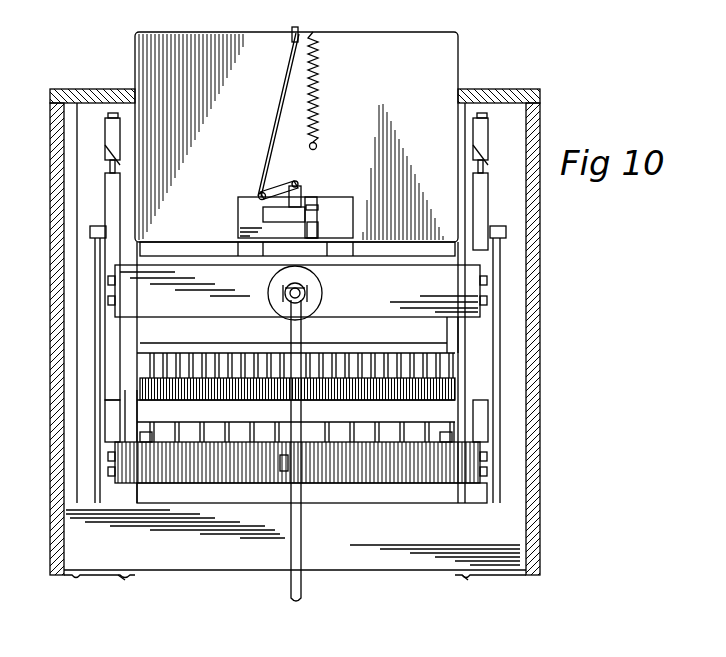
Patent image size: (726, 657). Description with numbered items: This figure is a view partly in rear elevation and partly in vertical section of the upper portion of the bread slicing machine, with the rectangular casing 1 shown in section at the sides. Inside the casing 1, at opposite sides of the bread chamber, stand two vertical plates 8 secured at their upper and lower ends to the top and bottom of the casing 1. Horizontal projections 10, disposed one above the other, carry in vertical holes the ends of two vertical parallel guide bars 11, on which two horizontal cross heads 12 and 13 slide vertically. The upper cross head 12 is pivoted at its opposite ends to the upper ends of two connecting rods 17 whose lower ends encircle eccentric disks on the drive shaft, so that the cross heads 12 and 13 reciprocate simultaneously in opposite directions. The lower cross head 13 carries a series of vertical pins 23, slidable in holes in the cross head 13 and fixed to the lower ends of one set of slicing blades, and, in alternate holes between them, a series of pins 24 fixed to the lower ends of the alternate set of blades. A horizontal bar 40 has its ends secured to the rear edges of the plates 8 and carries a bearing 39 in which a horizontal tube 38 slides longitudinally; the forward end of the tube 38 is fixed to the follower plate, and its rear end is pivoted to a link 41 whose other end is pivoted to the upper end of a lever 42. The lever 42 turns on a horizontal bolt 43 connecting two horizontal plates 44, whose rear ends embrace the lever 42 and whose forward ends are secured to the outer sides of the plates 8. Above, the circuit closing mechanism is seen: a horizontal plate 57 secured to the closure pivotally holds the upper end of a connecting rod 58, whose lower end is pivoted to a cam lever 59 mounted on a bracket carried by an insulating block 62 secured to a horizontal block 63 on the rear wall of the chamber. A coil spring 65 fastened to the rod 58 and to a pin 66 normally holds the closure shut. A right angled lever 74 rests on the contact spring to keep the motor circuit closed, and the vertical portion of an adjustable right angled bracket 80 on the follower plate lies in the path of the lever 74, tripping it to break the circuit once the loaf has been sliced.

The casing 1 is at (50, 150).
The vertical plates 8 is at (122, 152).
The horizontal projections 10 is at (108, 128).
The guide bars 11 is at (112, 168).
The cross head 12 is at (112, 205).
The cross head 13 is at (115, 422).
The connecting rods 17 is at (95, 262).
The vertical pins 23 is at (400, 445).
The pins 24 is at (455, 390).
The tube 38 is at (290, 272).
The bearing 39 is at (323, 293).
The horizontal bar 40 is at (297, 291).
The link 41 is at (282, 300).
The lever 42 is at (292, 553).
The horizontal bolt 43 is at (282, 472).
The horizontal plates 44 is at (355, 482).
The horizontal plate 57 is at (292, 30).
The connecting rod 58 is at (282, 70).
The cam lever 59 is at (260, 186).
The block of insulation material 62 is at (272, 215).
The horizontal block 63 is at (238, 200).
The coil spring 65 is at (318, 80).
The pin 66 is at (318, 146).
The right angled lever 74 is at (329, 217).
The right angled bracket 80 is at (320, 232).